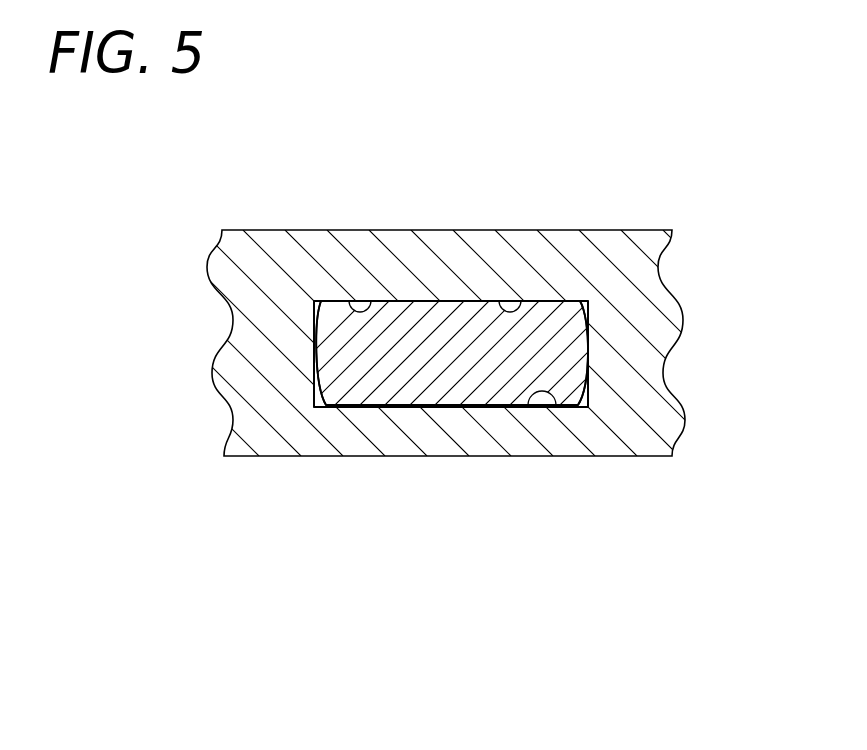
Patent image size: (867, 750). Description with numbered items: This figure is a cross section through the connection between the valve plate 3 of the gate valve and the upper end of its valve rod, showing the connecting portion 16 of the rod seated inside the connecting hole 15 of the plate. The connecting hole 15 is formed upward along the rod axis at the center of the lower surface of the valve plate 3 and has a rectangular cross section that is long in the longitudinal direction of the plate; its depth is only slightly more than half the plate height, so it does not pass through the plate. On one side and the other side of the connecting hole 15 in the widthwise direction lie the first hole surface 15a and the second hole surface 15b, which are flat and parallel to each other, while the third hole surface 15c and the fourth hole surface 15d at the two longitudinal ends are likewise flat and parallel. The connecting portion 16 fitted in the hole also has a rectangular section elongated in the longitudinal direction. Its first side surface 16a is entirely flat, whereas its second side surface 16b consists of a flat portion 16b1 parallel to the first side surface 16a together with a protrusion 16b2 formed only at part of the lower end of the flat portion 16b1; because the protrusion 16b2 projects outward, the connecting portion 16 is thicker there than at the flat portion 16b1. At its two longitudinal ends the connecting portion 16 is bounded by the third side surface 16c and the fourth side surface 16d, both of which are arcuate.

The valve plate 3 is at (608, 248).
The connecting hole 15 is at (523, 310).
The first hole surface 15a is at (348, 300).
The second hole surface 15b is at (557, 410).
The third hole surface 15c is at (314, 393).
The fourth hole surface 15d is at (590, 393).
The connecting portion 16 is at (405, 345).
The first side surface 16a is at (452, 300).
The second side surface 16b is at (492, 535).
The flat portion 16b1 is at (370, 405).
The protrusion 16b2 is at (452, 408).
The third side surface 16c is at (316, 308).
The fourth side surface 16d is at (590, 313).